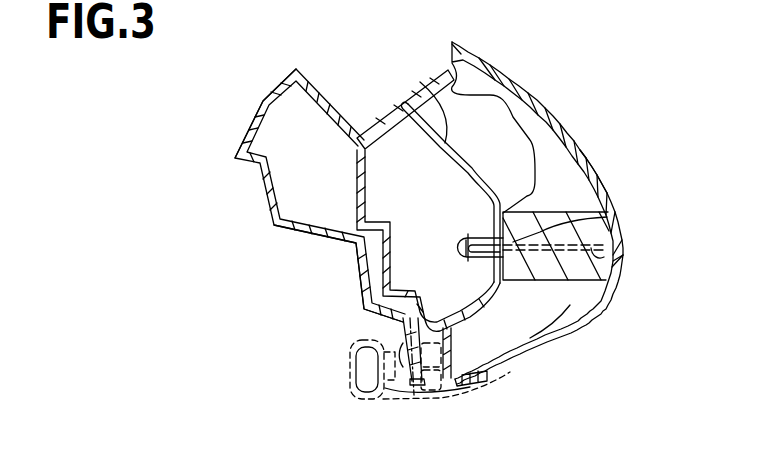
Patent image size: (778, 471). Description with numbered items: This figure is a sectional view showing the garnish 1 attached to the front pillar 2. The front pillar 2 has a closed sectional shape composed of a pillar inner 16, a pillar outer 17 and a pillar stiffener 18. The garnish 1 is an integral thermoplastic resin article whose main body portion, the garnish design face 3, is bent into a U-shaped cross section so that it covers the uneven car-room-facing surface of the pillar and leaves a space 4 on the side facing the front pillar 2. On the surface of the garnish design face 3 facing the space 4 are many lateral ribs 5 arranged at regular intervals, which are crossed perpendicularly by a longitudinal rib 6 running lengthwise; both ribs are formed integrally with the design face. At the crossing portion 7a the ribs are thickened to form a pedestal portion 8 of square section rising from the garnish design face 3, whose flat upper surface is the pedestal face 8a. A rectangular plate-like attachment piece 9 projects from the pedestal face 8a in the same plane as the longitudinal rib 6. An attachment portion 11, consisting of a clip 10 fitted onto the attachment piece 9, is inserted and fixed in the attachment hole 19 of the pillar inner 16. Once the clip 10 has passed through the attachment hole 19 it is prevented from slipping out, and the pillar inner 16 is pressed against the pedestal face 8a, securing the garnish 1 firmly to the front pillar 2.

The garnish 1 is at (563, 108).
The front pillar 2 is at (280, 163).
The main body portion (garnish design face) 3 is at (597, 164).
The space 4 is at (487, 153).
The lateral ribs 5 is at (570, 305).
The longitudinal rib 6 is at (623, 274).
The crossing portion 7a is at (514, 293).
The pedestal portion 8 is at (549, 211).
The pedestal face 8a is at (486, 222).
The attachment piece 9 is at (486, 275).
The clip 10 is at (457, 256).
The attachment portion 11 is at (467, 230).
The pillar inner 16 is at (420, 82).
The pillar outer 17 is at (248, 128).
The pillar stiffener 18 is at (356, 178).
The attachment hole 19 is at (607, 217).